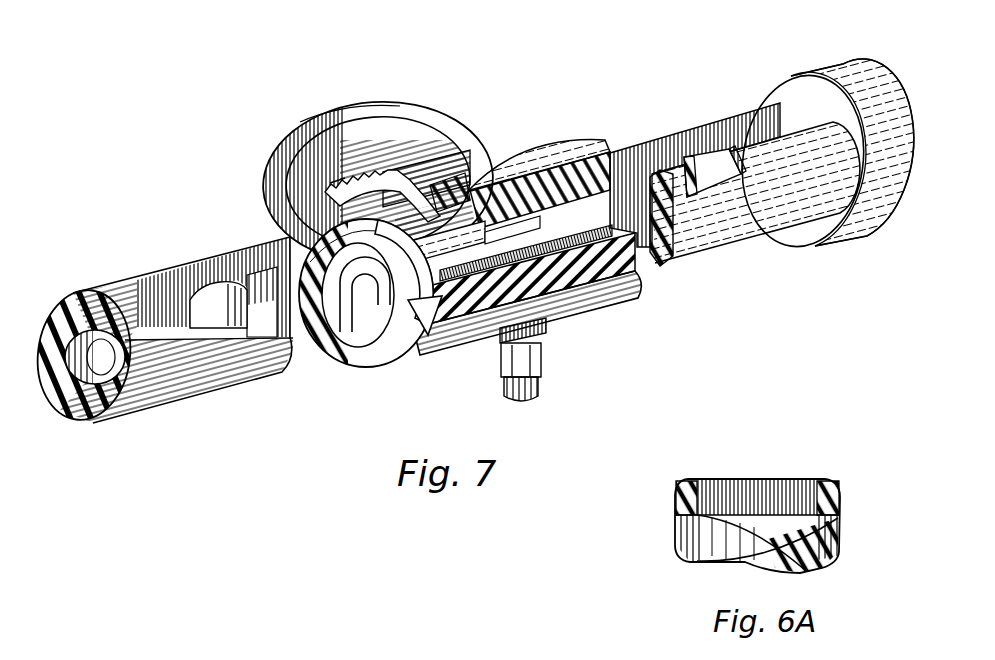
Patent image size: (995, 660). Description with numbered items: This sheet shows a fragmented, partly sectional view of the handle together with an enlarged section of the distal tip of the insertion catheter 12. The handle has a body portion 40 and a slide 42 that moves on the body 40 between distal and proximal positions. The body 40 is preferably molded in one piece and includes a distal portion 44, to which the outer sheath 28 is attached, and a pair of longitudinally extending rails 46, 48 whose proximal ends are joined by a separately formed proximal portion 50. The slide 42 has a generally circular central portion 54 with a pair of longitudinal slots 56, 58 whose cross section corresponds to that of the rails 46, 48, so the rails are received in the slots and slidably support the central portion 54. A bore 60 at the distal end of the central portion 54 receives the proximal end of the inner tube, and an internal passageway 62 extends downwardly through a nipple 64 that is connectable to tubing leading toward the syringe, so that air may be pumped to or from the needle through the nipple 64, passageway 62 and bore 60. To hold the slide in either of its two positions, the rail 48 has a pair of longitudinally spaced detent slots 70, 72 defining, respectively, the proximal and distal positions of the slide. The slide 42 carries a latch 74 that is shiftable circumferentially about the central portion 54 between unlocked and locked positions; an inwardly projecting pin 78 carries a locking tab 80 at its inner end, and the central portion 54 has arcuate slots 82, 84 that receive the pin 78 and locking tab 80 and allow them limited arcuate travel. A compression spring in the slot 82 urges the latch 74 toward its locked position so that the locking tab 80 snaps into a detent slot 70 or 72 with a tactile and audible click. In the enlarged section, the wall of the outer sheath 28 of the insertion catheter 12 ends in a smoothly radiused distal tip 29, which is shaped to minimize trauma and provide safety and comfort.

In FIG. 7, the body portion 40 is at (471, 218).
In FIG. 7, the slide 42 is at (402, 108).
In FIG. 7, the distal portion 44 is at (161, 331).
In FIG. 7, the rail 46 is at (695, 159).
In FIG. 7, the rail 48 is at (713, 223).
In FIG. 7, the proximal portion 50 is at (817, 67).
In FIG. 7, the central portion 54 is at (527, 247).
In FIG. 7, the slot 56 is at (324, 313).
In FIG. 7, the slot 58 is at (405, 327).
In FIG. 7, the bore 60 is at (391, 317).
In FIG. 7, the internal passageway 62 is at (547, 173).
In FIG. 7, the nipple 64 is at (538, 363).
In FIG. 7, the detent slot 70 is at (697, 135).
In FIG. 7, the detent slot 72 is at (232, 358).
In FIG. 7, the latch 74 is at (330, 178).
In FIG. 7, the pin 78 is at (370, 178).
In FIG. 7, the locking tab 80 is at (363, 233).
In FIG. 7, the arcuate slot 82 is at (422, 168).
In FIG. 7, the arcuate slot 84 is at (491, 157).
In FIG. 6A, the insertion catheter 12 is at (751, 512).
In FIG. 6A, the outer sheath 28 is at (693, 540).
In FIG. 6A, the radiused distal tip 29 is at (688, 486).